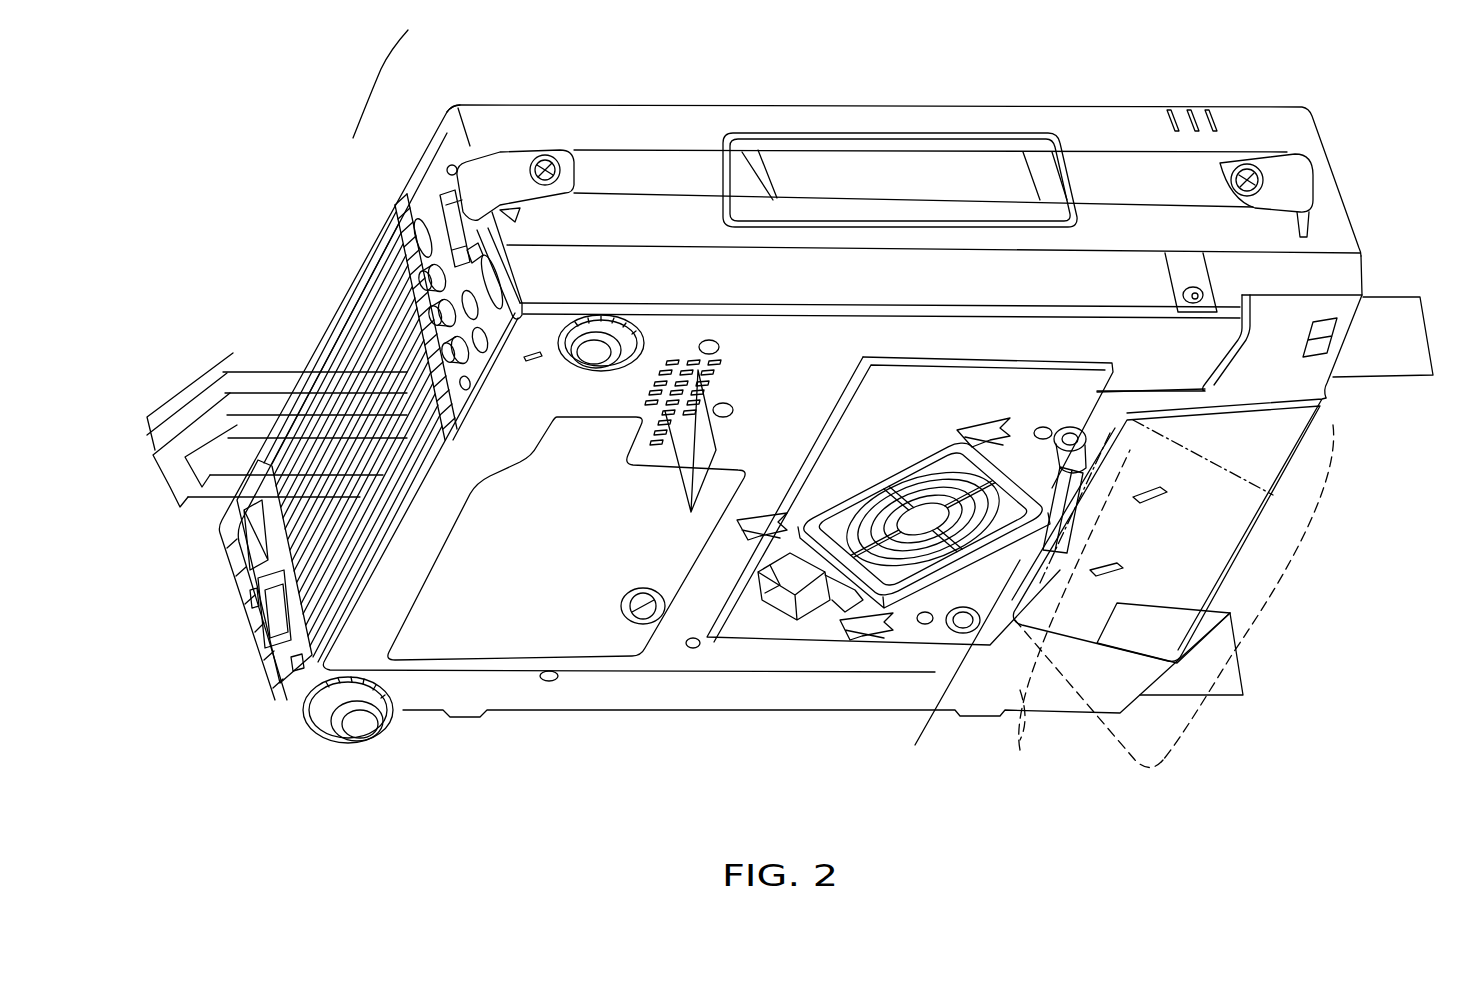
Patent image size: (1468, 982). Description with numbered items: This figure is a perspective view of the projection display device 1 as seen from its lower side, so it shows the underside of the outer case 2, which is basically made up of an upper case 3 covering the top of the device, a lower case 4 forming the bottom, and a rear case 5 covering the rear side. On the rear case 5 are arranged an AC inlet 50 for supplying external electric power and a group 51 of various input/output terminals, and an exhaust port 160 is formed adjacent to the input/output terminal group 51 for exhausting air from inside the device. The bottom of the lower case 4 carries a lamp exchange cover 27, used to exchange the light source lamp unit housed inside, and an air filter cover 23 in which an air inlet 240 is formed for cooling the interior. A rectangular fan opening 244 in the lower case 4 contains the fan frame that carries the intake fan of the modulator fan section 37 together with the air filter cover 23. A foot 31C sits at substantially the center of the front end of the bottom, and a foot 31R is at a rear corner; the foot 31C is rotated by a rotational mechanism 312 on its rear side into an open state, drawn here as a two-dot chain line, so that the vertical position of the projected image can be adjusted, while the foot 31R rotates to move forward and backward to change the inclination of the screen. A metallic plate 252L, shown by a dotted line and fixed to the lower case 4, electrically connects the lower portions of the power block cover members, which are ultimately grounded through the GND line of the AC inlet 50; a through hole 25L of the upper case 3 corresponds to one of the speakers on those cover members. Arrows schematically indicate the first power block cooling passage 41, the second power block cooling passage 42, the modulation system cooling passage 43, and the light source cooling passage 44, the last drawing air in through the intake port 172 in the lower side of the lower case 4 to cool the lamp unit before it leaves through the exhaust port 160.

The projection display device 1 is at (228, 226).
The outer case 2 is at (378, 84).
The upper case 3 is at (483, 115).
The lower case 4 is at (537, 267).
The rear case 5 is at (437, 187).
The group of input/output terminals 51 is at (427, 347).
The exhaust port 160 is at (333, 318).
The AC inlet 50 is at (282, 615).
The through hole 25L is at (355, 722).
The foot 31R is at (601, 356).
The lamp exchange cover 27 is at (589, 639).
The intake port 172 is at (719, 375).
The light source cooling passage 44 is at (693, 490).
The modulation system cooling passage 43 is at (950, 683).
The fan opening 244 is at (830, 497).
The modulator fan section 37 is at (927, 477).
The air filter cover 23 is at (838, 572).
The air inlet 240 is at (953, 513).
The rotational mechanism 312 is at (1083, 517).
The foot 31C is at (1293, 547).
The metallic plate 252L is at (1053, 739).
The first power block cooling passage 41 is at (1223, 673).
The second power block cooling passage 42 is at (1393, 310).